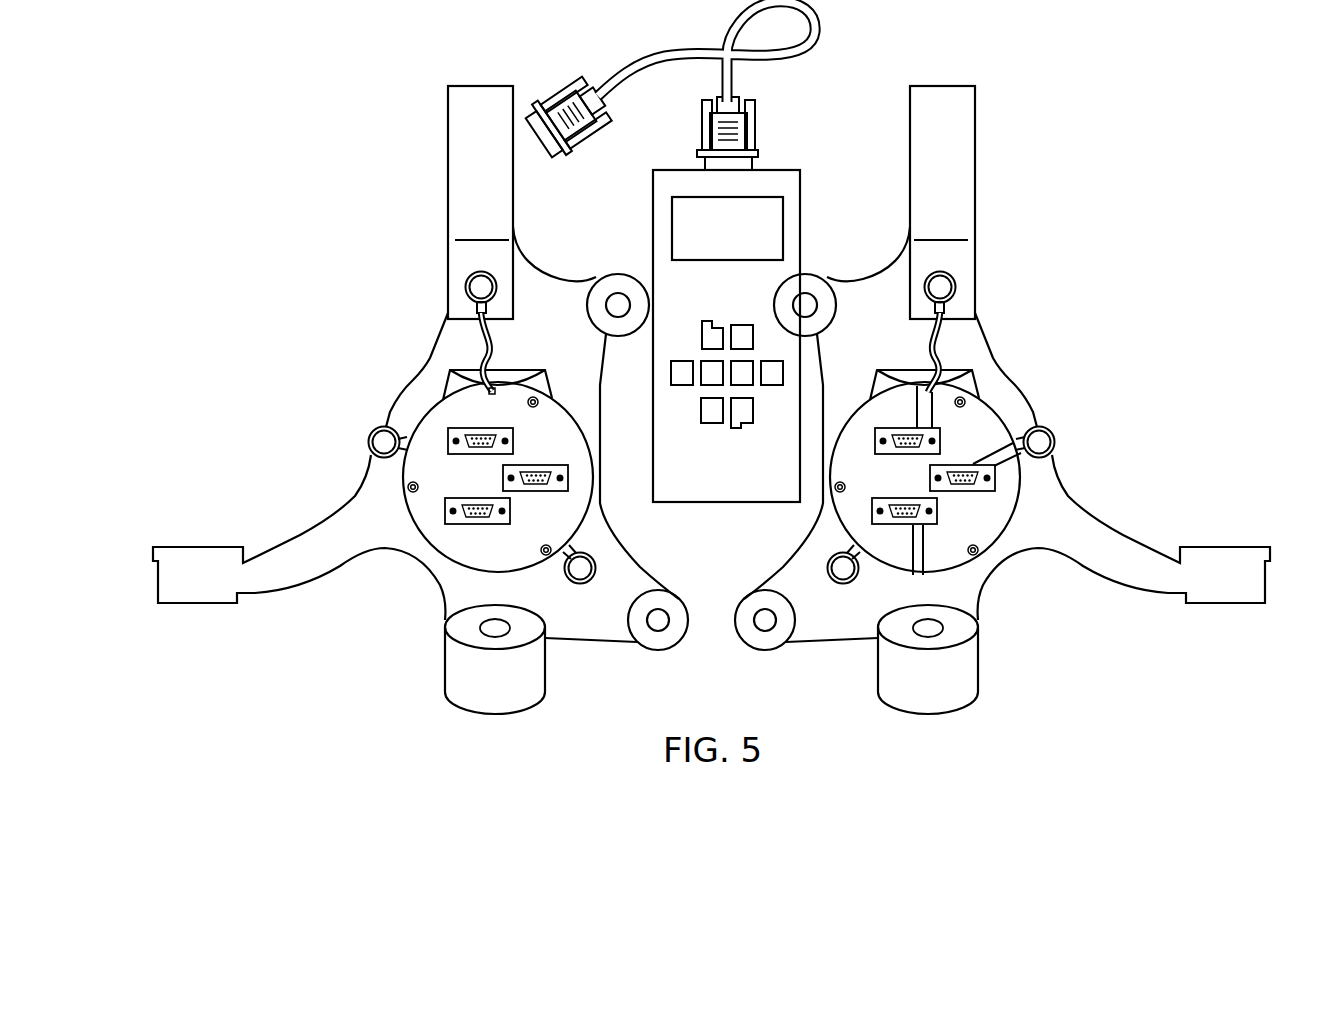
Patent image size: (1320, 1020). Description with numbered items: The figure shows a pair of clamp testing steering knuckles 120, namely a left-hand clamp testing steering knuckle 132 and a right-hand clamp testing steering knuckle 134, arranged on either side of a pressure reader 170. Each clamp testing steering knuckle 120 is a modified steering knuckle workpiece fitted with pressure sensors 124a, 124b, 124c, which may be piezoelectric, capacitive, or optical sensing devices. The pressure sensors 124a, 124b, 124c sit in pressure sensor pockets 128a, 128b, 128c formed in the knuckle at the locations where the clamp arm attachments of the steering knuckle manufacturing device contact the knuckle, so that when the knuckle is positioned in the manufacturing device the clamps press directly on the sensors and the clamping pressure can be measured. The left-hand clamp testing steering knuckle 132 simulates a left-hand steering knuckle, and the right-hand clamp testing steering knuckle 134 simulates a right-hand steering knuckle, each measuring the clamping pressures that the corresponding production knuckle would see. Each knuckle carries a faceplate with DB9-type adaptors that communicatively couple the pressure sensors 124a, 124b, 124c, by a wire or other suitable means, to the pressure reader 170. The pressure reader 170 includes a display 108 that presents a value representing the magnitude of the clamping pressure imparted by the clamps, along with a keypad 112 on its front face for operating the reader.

The clamp testing steering knuckle 120 is at (711, 400).
The pressure sensor 124a is at (473, 286).
The pressure sensor 124b is at (380, 437).
The pressure sensor 124c is at (580, 584).
The pressure sensor pocket 128a is at (472, 293).
The pressure sensor pocket 128b is at (372, 445).
The pressure sensor pocket 128c is at (592, 555).
The left-hand clamp testing steering knuckle 132 is at (324, 542).
The right-hand clamp testing steering knuckle 134 is at (1100, 542).
The pressure reader 170 is at (683, 252).
The display 108 is at (771, 223).
The keypad 112 is at (712, 386).